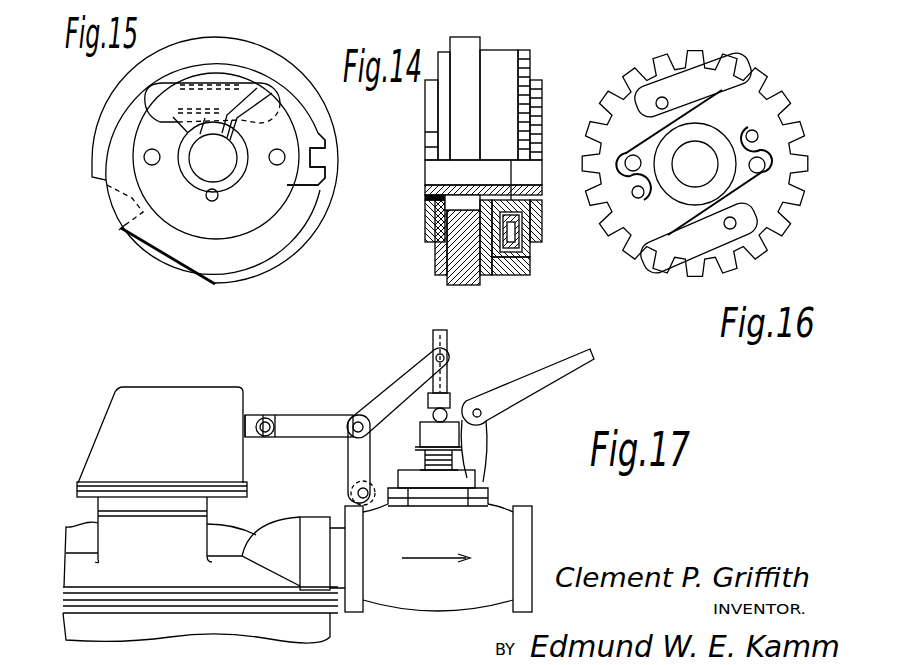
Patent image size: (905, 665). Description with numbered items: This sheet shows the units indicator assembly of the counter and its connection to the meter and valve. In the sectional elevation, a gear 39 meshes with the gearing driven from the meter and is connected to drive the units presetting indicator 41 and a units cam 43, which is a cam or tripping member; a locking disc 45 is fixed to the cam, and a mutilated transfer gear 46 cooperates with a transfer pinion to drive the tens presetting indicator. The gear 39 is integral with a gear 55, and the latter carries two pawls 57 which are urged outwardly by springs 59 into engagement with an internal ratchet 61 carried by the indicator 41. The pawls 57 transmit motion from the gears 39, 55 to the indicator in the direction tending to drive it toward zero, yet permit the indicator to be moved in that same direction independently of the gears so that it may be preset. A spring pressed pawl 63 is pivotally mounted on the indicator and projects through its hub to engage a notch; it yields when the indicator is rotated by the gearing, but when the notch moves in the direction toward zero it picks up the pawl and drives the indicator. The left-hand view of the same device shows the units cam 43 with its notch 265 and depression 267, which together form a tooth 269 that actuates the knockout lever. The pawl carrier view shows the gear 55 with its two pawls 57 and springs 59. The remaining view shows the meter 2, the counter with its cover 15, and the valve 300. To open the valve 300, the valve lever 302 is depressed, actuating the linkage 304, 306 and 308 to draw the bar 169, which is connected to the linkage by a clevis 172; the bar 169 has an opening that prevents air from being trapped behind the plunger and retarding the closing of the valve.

In FIG. 17, the meter 2 is at (234, 636).
In FIG. 17, the cover 15 is at (212, 392).
In FIG. 14, the gear 39 is at (544, 86).
In FIG. 14, the units presetting indicator 41 is at (498, 52).
In FIG. 14, the units cam 43 is at (470, 40).
In FIG. 15, the units cam 43 is at (258, 273).
In FIG. 14, the locking disc 45 is at (440, 52).
In FIG. 15, the locking disc 45 is at (183, 50).
In FIG. 14, the mutilated transfer gear 46 is at (432, 112).
In FIG. 15, the mutilated transfer gear 46 is at (313, 185).
In FIG. 14, the gear 55 is at (532, 52).
In FIG. 16, the gear 55 is at (768, 72).
In FIG. 14, the pawls 57 is at (528, 230).
In FIG. 16, the pawls 57 is at (722, 56).
In FIG. 16, the springs 59 is at (703, 100).
In FIG. 14, the internal ratchet 61 is at (525, 255).
In FIG. 15, the spring pressed pawl 63 is at (272, 92).
In FIG. 17, the bar 169 is at (250, 428).
In FIG. 17, the clevis 172 is at (268, 422).
In FIG. 15, the notch 265 is at (132, 198).
In FIG. 15, the depression 267 is at (190, 270).
In FIG. 15, the tooth 269 is at (123, 230).
In FIG. 17, the valve 300 is at (423, 612).
In FIG. 17, the valve lever 302 is at (543, 372).
In FIG. 17, the linkage 304 is at (362, 438).
In FIG. 17, the linkage 306 is at (380, 398).
In FIG. 17, the linkage 308 is at (308, 420).